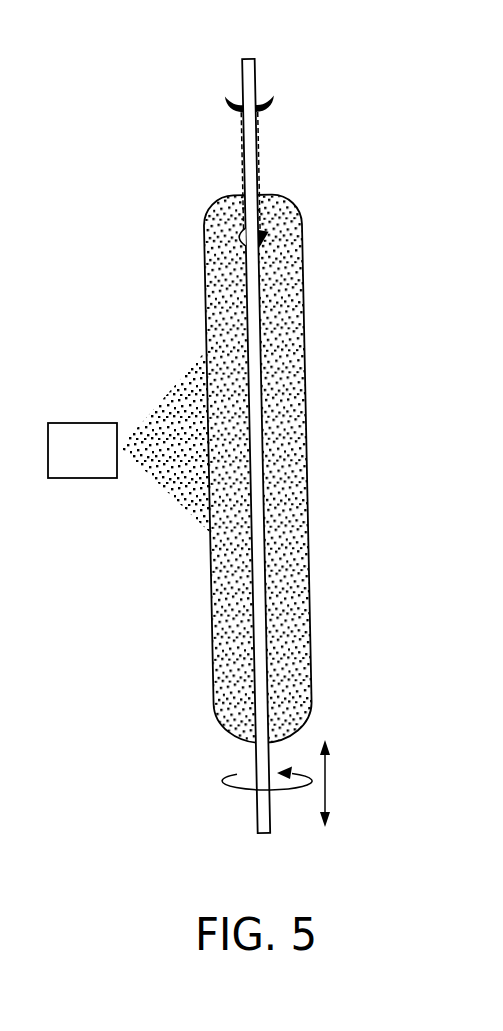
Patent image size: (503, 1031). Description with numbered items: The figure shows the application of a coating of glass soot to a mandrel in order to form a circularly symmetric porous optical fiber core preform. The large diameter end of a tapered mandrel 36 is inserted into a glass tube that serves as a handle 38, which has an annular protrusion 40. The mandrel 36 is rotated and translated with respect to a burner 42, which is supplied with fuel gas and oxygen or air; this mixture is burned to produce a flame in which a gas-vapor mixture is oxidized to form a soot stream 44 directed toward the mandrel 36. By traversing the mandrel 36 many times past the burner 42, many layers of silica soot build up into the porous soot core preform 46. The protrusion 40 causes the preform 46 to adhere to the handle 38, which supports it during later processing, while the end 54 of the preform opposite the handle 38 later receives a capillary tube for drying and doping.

The tapered mandrel 36 is at (242, 82).
The handle 38 is at (257, 182).
The annular protrusion 40 is at (266, 241).
The burner 42 is at (82, 423).
The soot stream 44 is at (175, 497).
The porous soot core preform 46 is at (345, 432).
The end of porous preform aperture 54 is at (212, 696).